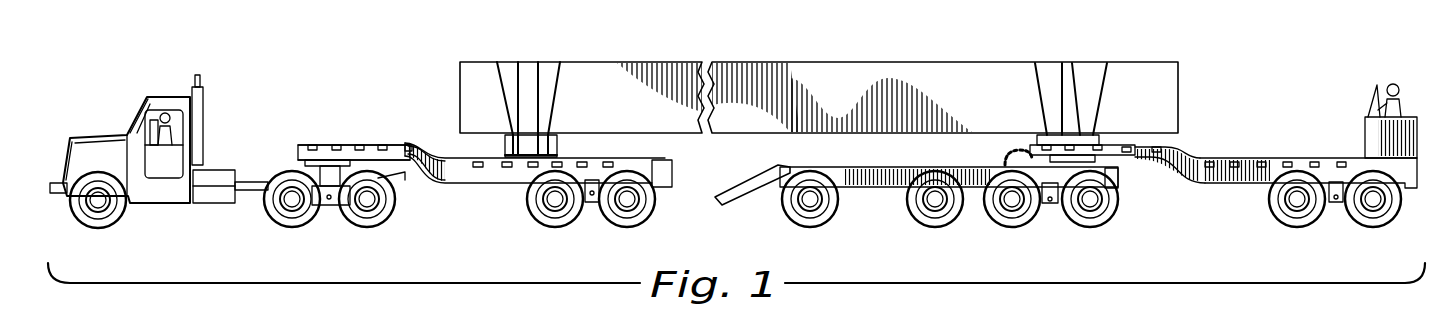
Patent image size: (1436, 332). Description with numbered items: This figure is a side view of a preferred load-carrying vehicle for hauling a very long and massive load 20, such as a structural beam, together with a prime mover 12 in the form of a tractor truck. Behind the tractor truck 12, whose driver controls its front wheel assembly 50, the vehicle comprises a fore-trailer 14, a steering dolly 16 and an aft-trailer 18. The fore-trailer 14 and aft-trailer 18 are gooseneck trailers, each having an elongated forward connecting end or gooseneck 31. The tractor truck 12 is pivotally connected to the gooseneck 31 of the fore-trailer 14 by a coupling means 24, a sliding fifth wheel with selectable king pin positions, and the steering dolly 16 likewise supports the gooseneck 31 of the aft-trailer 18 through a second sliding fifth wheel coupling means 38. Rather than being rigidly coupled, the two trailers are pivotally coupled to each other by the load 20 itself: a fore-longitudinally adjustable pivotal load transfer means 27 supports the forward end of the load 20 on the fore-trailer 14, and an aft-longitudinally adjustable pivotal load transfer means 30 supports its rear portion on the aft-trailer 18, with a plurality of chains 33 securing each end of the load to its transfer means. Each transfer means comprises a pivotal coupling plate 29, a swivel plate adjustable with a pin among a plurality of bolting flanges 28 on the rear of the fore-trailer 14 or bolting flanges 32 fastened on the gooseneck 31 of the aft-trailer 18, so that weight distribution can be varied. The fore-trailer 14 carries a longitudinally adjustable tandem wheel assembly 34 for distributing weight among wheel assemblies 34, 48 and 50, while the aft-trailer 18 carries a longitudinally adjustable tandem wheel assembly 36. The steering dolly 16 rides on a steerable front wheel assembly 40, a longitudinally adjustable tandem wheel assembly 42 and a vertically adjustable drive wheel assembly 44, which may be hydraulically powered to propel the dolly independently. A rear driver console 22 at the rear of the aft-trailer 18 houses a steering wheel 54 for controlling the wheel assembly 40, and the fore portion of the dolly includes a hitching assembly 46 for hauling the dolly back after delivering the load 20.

The prime mover 12 is at (180, 84).
The front wheel assembly 50 is at (130, 213).
The coupling means 24 is at (294, 159).
The wheel assembly 48 is at (392, 212).
The bolting flanges 32 is at (312, 143).
The gooseneck 31 is at (345, 145).
The pivotal coupling plate 29 is at (496, 152).
The bolting flanges 28 is at (533, 167).
The fore-trailer 14 is at (448, 208).
The fore-longitudinally adjustable pivotal load transfer means 27 is at (557, 155).
The chains 33 is at (560, 62).
The longitudinally adjustable tandem wheel assembly 34 is at (592, 204).
The load 20 is at (946, 56).
The hitching assembly 46 is at (742, 172).
The steering dolly 16 is at (885, 205).
The wheel assembly 40 is at (822, 216).
The vertically adjustable drive wheel assembly 44 is at (950, 216).
The longitudinally adjustable tandem wheel assembly 42 is at (1050, 205).
The coupling means 38 is at (1020, 150).
The aft-longitudinally adjustable pivotal load transfer means 30 is at (1104, 134).
The aft-trailer 18 is at (1215, 205).
The longitudinally adjustable tandem wheel assembly 36 is at (1337, 204).
The rear driver console 22 is at (1416, 106).
The steering wheel 54 is at (1371, 105).